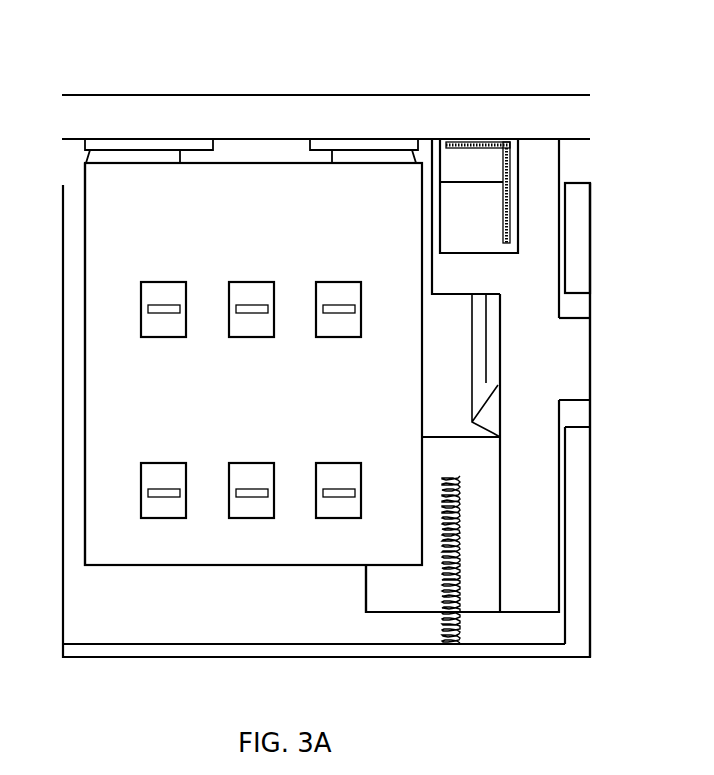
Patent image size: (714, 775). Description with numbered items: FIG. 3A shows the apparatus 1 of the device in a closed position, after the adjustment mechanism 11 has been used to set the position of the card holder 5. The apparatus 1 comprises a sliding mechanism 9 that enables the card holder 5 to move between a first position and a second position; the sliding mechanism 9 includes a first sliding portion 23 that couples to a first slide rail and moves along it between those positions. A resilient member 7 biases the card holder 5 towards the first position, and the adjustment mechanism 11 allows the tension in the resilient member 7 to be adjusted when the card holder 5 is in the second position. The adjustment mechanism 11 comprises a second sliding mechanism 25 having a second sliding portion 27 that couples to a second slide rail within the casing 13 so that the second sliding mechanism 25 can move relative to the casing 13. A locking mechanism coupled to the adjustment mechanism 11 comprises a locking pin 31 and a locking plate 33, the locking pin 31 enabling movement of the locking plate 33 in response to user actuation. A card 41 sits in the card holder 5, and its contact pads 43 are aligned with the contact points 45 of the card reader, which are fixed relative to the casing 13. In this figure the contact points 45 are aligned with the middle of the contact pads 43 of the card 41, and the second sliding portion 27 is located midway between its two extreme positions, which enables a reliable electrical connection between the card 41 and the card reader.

The apparatus 1 is at (532, 615).
The card holder 5 is at (83, 513).
The resilient member 7 is at (444, 88).
The sliding mechanism 9 is at (470, 600).
The adjustment mechanism 11 is at (542, 270).
The casing 13 is at (567, 110).
The first sliding portion 23 is at (415, 603).
The second sliding mechanism 25 is at (548, 208).
The second sliding portion 27 is at (578, 353).
The locking pin 31 is at (487, 150).
The locking plate 33 is at (490, 420).
The card 41 is at (100, 444).
The contact pads 43 is at (155, 338).
The contact points 45 is at (172, 303).